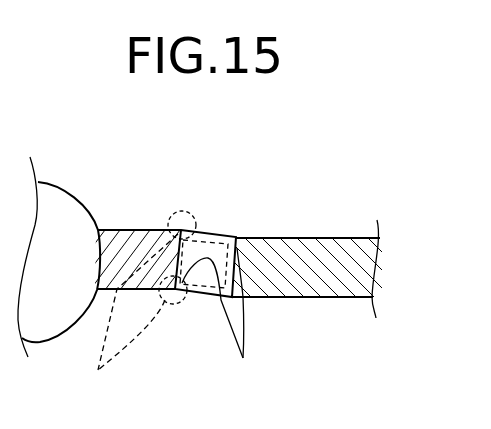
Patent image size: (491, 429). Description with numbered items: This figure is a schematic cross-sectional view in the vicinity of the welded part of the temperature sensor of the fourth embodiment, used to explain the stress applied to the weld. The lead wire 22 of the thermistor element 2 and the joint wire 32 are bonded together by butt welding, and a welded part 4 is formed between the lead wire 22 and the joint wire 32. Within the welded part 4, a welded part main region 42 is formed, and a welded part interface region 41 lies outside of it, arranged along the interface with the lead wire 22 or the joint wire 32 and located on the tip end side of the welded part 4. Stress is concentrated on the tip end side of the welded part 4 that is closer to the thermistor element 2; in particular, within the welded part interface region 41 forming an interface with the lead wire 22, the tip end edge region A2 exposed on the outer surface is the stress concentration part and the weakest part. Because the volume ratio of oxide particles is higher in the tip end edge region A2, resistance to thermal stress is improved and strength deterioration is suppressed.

The thermistor element 2 is at (93, 183).
The lead wire 22 is at (137, 240).
The joint wire 32 is at (323, 252).
The welded part 4 is at (198, 304).
The welded part interface region 41 is at (225, 313).
The welded part main region 42 is at (208, 232).
The tip end edge region A2 is at (128, 320).